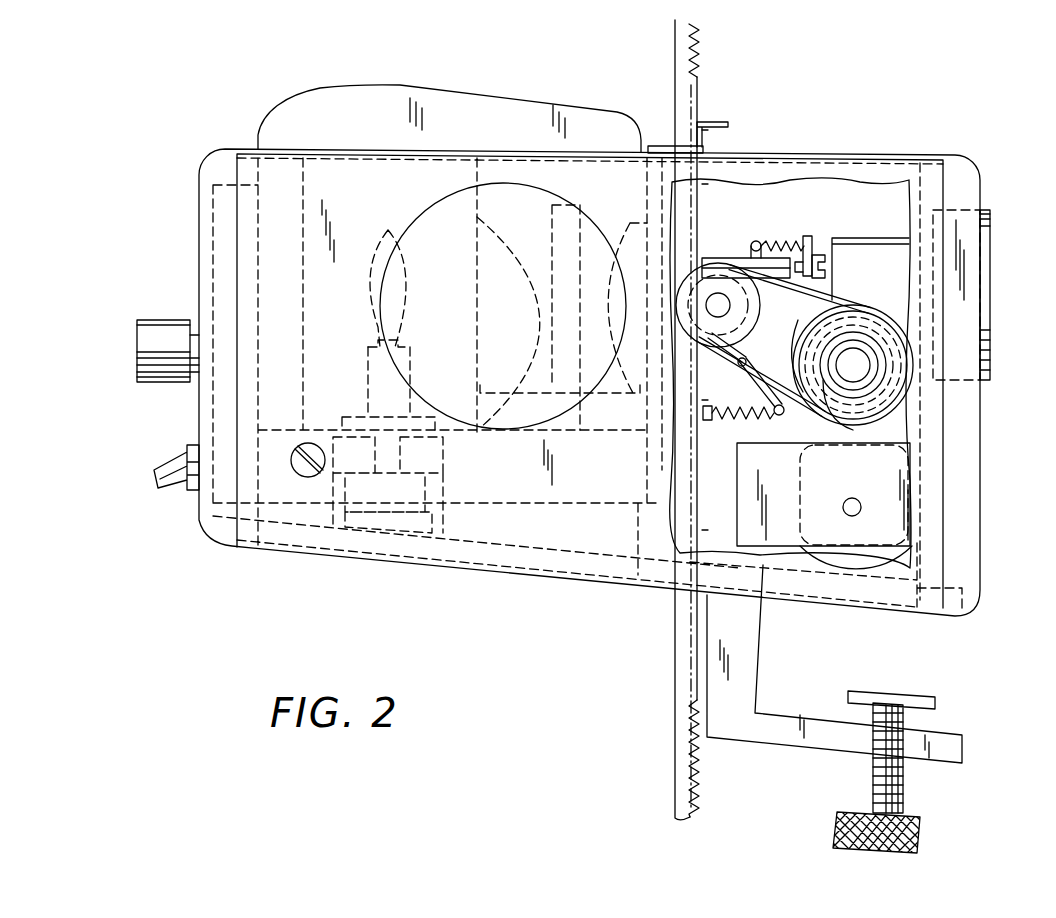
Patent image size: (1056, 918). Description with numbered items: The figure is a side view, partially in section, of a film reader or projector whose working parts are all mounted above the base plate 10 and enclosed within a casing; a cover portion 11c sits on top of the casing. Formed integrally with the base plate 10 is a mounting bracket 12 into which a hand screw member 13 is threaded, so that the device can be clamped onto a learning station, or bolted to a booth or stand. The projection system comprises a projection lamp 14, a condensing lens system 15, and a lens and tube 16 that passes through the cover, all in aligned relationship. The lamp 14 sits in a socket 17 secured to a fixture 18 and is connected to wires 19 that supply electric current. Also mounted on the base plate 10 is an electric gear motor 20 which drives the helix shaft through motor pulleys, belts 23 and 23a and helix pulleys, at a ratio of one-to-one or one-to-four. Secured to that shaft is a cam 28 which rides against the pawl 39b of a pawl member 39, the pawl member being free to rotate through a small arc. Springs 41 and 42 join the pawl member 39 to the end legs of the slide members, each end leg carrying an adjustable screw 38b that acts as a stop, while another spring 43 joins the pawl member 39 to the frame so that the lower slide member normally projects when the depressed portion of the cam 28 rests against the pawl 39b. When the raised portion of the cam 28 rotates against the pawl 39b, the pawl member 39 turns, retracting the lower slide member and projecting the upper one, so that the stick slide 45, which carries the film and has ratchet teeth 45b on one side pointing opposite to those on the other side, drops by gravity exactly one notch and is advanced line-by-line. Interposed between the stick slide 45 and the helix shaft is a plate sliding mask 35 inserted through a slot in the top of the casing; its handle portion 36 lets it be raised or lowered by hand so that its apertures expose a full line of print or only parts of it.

The base plate 10 is at (488, 568).
The cover dome 11c is at (447, 96).
The mounting bracket 12 is at (786, 738).
The hand screw member 13 is at (915, 824).
The projection lamp 14 is at (380, 292).
The condensing lens system 15 is at (500, 410).
The lens and tube 16 is at (986, 262).
The socket 17 is at (376, 383).
The fixture 18 is at (385, 502).
The wires 19 is at (166, 473).
The electric gear motor 20 is at (800, 516).
The belt 23 is at (823, 400).
The belt 23a is at (840, 302).
The cam 28 is at (715, 298).
The plate sliding mask 35 is at (712, 142).
The handle portion 36 is at (718, 122).
The screw 38b is at (820, 255).
The pawl member 39 is at (756, 241).
The pawl 39b is at (714, 404).
The spring 41 is at (808, 236).
The spring 42 is at (778, 416).
The spring 43 is at (736, 420).
The stick slide 45 is at (673, 73).
The ratchet teeth 45b is at (698, 58).